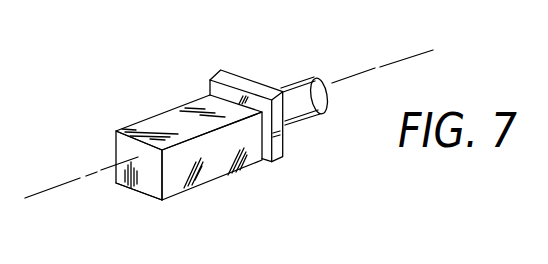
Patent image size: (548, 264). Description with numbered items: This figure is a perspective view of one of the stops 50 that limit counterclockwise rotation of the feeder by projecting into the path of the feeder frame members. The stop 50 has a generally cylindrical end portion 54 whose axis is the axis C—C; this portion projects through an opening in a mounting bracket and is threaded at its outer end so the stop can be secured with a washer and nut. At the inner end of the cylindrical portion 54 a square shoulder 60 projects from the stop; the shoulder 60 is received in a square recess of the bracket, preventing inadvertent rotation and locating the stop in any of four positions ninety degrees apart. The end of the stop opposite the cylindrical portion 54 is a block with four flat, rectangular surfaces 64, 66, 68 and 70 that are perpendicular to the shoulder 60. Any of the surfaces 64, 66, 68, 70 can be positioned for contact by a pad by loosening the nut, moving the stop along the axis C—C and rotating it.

The stop 50 is at (108, 130).
The cylindrical end portion 54 is at (288, 80).
The square shoulder 60 is at (220, 77).
The flat rectangular surface 64 is at (145, 197).
The flat rectangular surface 66 is at (115, 158).
The flat rectangular surface 68 is at (160, 127).
The flat rectangular surface 70 is at (207, 167).
The axis C is at (414, 49).